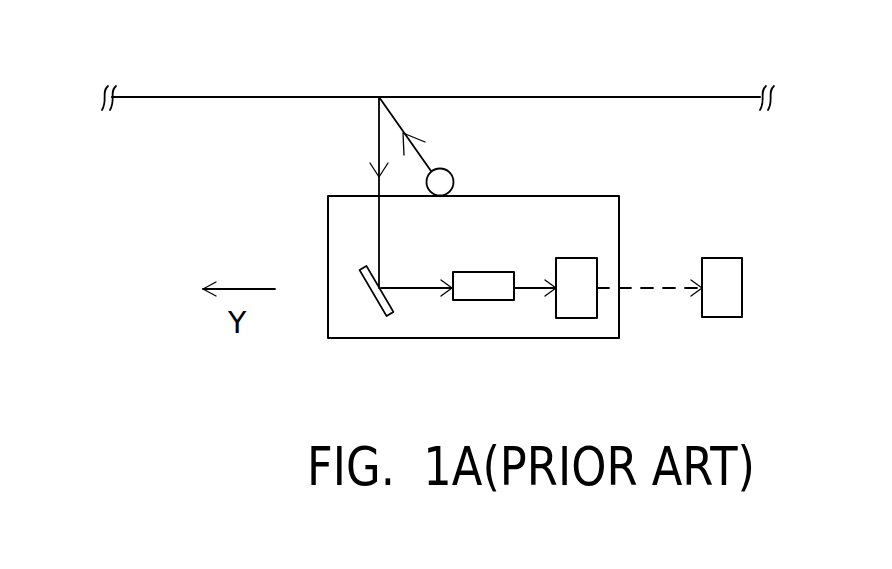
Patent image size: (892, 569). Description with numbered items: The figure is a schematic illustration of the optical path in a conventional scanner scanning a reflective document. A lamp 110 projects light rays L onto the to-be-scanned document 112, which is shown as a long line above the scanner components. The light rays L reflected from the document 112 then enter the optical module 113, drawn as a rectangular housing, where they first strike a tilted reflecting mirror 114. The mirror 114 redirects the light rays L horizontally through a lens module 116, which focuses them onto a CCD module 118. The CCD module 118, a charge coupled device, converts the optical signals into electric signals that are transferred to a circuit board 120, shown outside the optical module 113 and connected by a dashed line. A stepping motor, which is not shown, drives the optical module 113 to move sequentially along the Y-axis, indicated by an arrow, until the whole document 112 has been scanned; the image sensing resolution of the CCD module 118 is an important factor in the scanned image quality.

The lamp 110 is at (512, 177).
The to-be-scanned document 112 is at (228, 97).
The optical module 113 is at (328, 223).
The reflecting mirror 114 is at (384, 311).
The lens module 116 is at (482, 300).
The CCD module 118 is at (575, 318).
The circuit board 120 is at (720, 317).
The light rays L is at (431, 192).